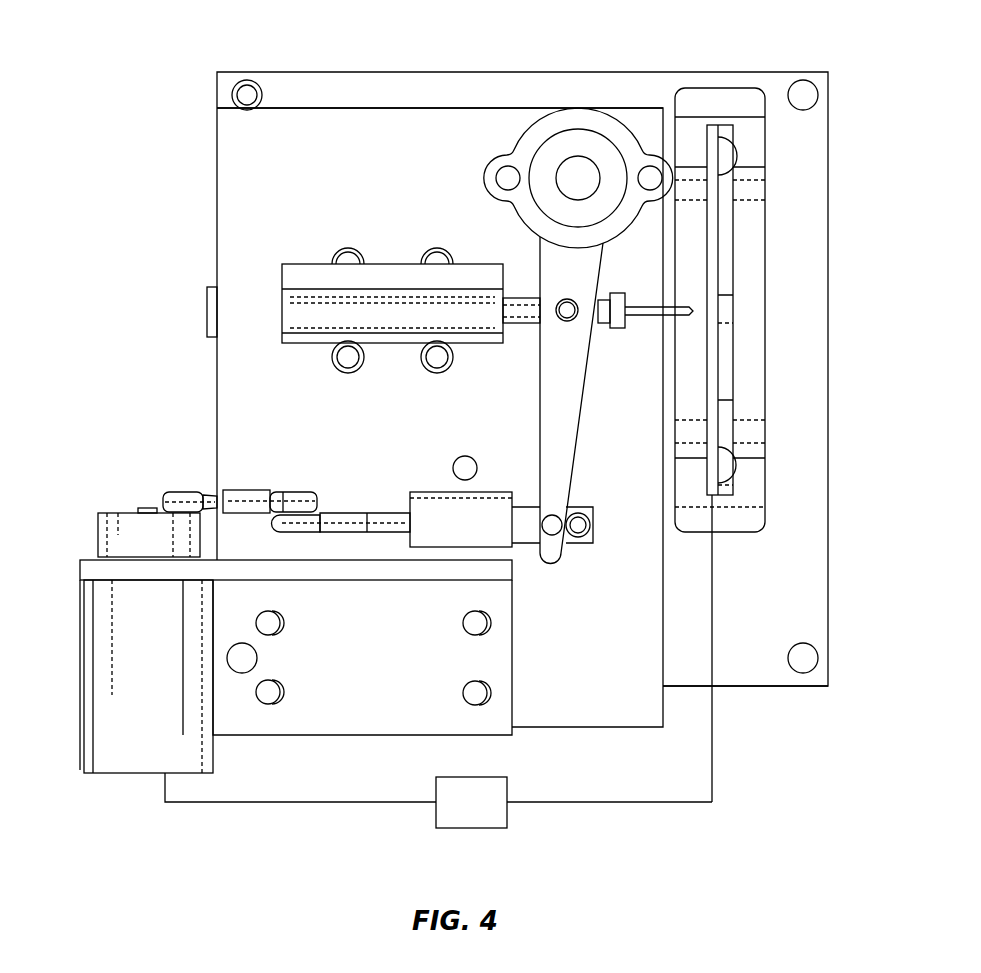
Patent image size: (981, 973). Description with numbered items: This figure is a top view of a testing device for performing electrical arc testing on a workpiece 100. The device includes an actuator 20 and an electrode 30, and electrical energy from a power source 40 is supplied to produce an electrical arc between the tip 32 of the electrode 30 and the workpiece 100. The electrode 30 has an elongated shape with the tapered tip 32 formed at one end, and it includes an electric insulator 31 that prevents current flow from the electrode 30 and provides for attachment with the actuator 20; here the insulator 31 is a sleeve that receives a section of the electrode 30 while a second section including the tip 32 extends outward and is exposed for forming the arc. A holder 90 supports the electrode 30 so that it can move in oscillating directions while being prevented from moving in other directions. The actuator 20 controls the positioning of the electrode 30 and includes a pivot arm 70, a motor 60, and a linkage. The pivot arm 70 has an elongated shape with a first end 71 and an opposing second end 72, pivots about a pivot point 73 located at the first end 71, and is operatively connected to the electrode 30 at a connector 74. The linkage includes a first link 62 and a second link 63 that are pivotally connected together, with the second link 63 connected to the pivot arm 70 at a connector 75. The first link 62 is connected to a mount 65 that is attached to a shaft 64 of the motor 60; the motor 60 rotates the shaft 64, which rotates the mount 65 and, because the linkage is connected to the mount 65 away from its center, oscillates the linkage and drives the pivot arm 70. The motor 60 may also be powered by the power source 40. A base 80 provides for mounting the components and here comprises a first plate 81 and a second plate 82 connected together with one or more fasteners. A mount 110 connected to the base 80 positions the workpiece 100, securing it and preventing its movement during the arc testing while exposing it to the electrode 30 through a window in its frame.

The actuator 20 is at (192, 240).
The electrode 30 is at (670, 307).
The electric insulator 31 is at (523, 313).
The tip 32 is at (693, 310).
The power source 40 is at (574, 802).
The motor 60 is at (123, 757).
The first link 62 is at (343, 520).
The second link 63 is at (247, 500).
The shaft 64 is at (152, 508).
The mount 65 is at (127, 540).
The pivot arm 70 is at (560, 408).
The first end 71 is at (570, 115).
The second end 72 is at (557, 565).
The pivot point 73 is at (578, 173).
The connector 74 is at (577, 302).
The connector 75 is at (593, 538).
The base 80 is at (323, 72).
The first plate 81 is at (242, 138).
The second plate 82 is at (787, 675).
The holder 90 is at (338, 282).
The workpiece 100 is at (712, 190).
The mount 110 is at (727, 103).